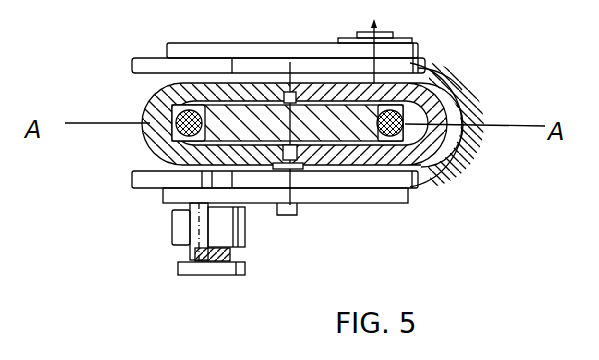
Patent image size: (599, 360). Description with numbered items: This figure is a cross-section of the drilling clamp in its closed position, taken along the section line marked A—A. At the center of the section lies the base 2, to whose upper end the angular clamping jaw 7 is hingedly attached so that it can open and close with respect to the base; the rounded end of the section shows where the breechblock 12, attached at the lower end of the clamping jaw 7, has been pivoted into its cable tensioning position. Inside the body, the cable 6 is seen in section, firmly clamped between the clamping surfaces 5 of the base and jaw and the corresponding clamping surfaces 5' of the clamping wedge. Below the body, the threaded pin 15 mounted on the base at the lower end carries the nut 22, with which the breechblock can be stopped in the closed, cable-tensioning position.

The base 2 is at (147, 151).
The clamping surfaces 5 is at (284, 212).
The clamping surfaces of the clamping wedge 5' is at (285, 220).
The cable 6 is at (147, 102).
The clamping jaw 7 is at (433, 77).
The breechblock 12 is at (466, 168).
The threaded pin 15 is at (233, 272).
The nut 22 is at (178, 228).